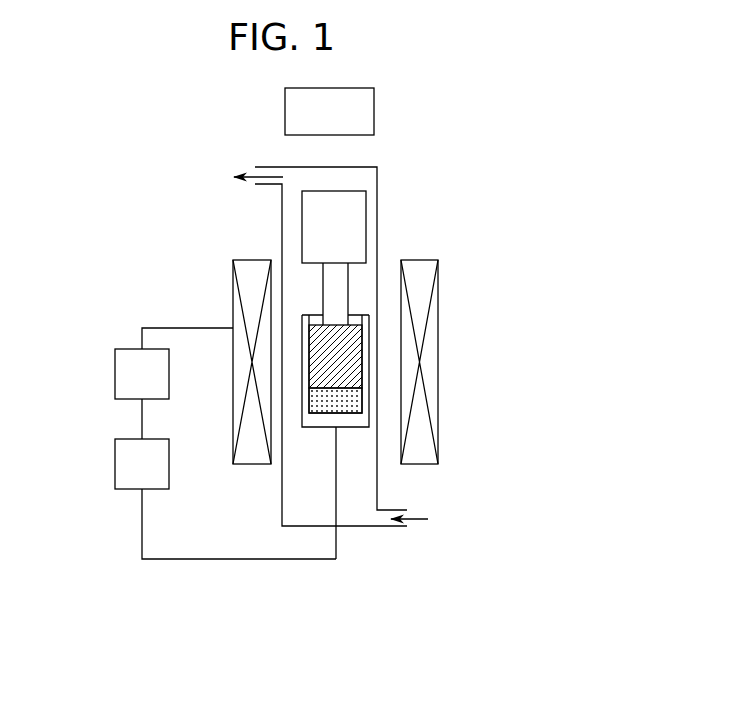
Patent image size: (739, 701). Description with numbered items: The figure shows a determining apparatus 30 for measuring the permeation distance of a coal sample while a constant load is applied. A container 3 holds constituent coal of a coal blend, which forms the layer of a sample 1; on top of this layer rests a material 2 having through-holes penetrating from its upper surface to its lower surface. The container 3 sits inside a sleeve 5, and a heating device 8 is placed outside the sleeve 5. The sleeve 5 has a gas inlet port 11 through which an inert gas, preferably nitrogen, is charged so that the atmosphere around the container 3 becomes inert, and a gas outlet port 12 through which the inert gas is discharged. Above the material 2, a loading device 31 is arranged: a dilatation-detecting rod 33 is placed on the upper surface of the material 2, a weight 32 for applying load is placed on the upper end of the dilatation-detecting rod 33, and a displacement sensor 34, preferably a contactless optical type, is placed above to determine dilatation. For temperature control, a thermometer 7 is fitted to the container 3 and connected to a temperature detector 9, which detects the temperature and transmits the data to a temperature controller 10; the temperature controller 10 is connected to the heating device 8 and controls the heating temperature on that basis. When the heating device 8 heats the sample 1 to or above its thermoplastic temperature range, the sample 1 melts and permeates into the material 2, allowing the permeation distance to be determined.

The sample 1 is at (347, 400).
The material having through-holes 2 is at (349, 347).
The container 3 is at (351, 427).
The sleeve 5 is at (378, 233).
The thermometer 7 is at (250, 560).
The heating device 8 is at (248, 302).
The temperature detector 9 is at (115, 472).
The temperature controller 10 is at (115, 382).
The gas inlet port 11 is at (372, 527).
The gas outlet port 12 is at (257, 166).
The determining apparatus 30 is at (544, 186).
The loading device 31 is at (486, 134).
The weight 32 is at (354, 219).
The dilatation-detecting rod 33 is at (348, 280).
The displacement sensor 34 is at (372, 105).